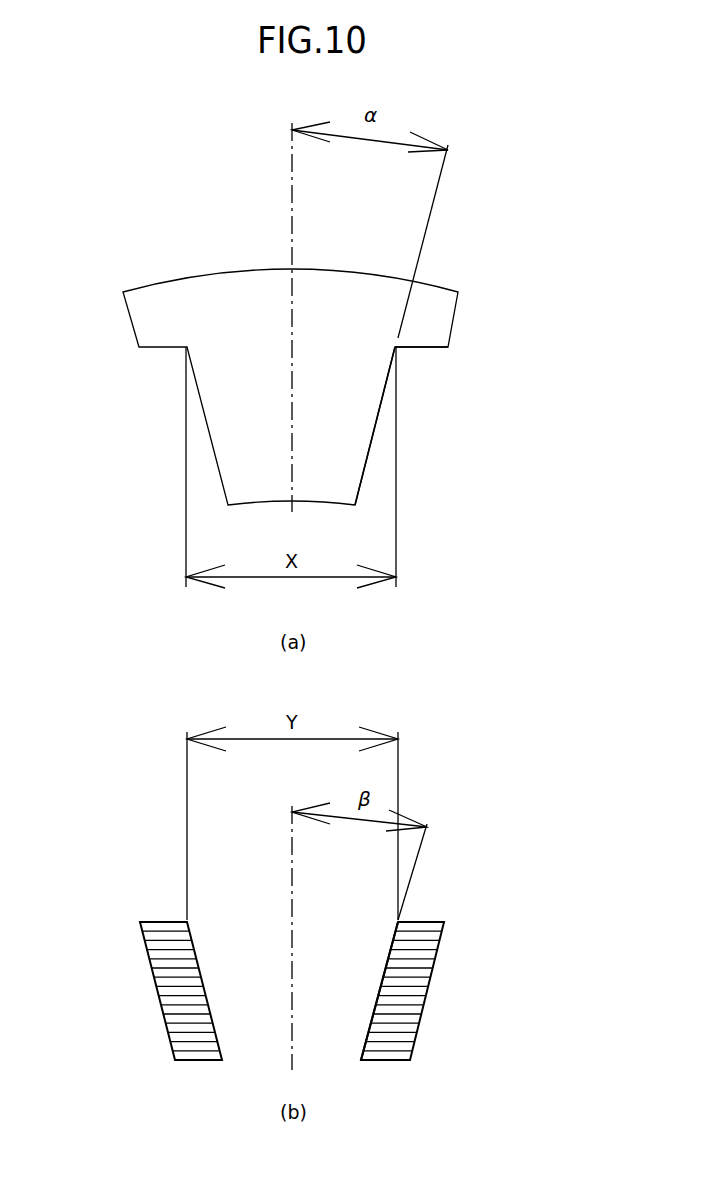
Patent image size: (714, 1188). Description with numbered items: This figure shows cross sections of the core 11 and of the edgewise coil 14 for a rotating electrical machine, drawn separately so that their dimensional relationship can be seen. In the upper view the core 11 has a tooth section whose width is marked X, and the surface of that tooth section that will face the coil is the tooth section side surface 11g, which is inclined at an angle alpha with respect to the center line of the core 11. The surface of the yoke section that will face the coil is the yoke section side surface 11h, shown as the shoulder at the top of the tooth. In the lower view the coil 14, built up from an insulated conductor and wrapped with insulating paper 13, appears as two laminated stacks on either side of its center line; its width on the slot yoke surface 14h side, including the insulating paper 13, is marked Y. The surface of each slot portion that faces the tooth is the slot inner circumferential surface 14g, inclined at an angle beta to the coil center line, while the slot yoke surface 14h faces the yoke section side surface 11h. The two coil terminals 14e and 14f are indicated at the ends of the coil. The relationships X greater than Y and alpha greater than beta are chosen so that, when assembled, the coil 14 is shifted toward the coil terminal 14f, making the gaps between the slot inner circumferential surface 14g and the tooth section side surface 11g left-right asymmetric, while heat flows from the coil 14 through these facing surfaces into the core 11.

The core 11 is at (432, 283).
The yoke section side surface 11h is at (428, 347).
The tooth section side surface 11g is at (368, 450).
The insulating paper 13 is at (152, 977).
The coil 14 is at (430, 948).
The coil terminal 14e is at (153, 922).
The coil terminal 14f is at (388, 1063).
The slot inner circumferential surface 14g is at (377, 1008).
The slot yoke surface 14h is at (425, 922).